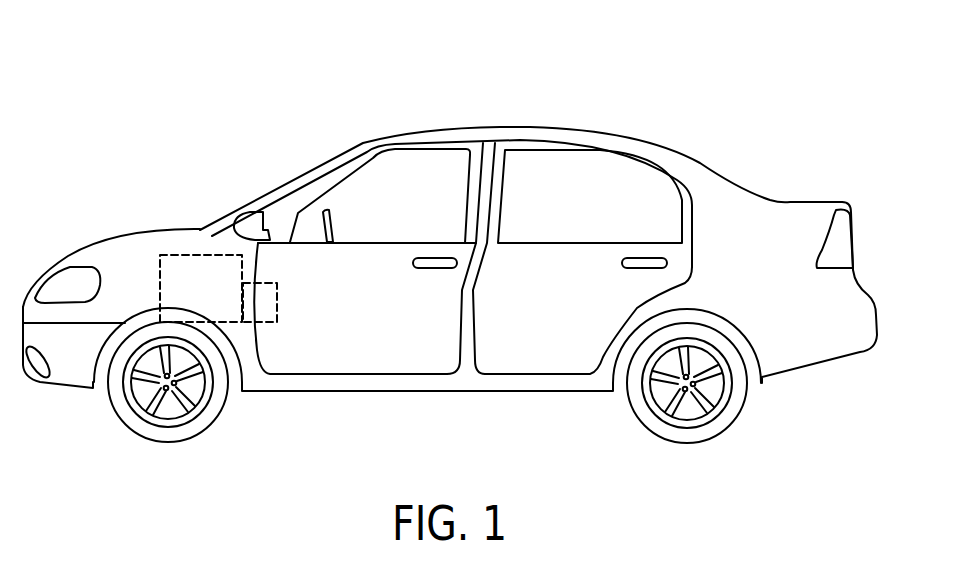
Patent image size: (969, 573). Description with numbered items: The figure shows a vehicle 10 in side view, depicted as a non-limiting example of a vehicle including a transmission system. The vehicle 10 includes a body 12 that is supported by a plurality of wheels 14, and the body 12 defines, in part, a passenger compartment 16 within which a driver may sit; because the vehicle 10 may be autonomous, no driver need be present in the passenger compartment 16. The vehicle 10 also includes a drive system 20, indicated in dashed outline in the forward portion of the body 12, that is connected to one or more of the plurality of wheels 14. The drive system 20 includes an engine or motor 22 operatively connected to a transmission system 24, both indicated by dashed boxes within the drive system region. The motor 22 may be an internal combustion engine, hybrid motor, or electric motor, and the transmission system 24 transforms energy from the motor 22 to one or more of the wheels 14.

The vehicle 10 is at (172, 61).
The body 12 is at (782, 227).
The wheels 14 is at (756, 441).
The passenger compartment 16 is at (388, 213).
The drive system 20 is at (158, 221).
The motor 22 is at (200, 288).
The transmission system 24 is at (267, 302).